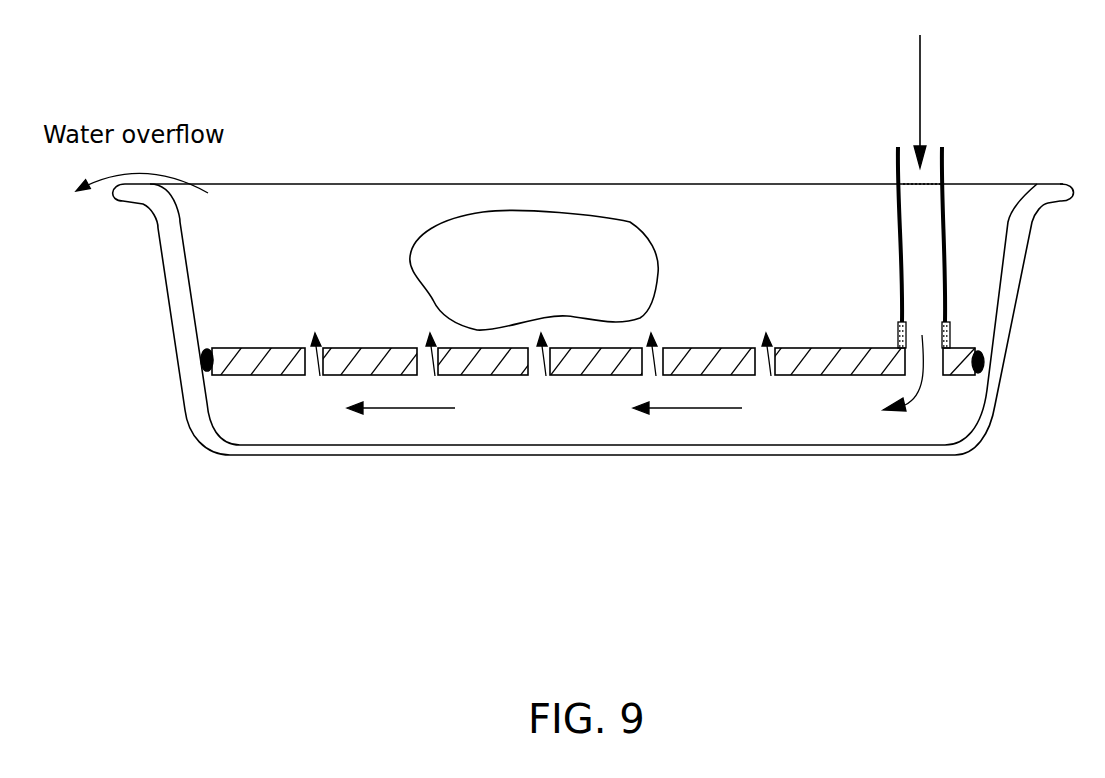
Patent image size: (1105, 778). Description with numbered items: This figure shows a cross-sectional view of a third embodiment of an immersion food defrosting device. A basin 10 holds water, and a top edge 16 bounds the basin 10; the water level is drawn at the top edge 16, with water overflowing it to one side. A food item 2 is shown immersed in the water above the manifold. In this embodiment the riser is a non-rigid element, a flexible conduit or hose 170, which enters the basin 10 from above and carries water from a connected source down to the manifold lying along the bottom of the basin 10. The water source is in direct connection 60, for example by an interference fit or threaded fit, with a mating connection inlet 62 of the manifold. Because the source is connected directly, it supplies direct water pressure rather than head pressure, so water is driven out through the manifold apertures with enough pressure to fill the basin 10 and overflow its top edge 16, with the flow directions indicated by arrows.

The basin 10 is at (1043, 196).
The top edge 16 is at (317, 184).
The object to be cleaned 2 is at (541, 286).
The flexible conduit or hose 170 is at (945, 157).
The mating connection inlet 62 is at (940, 337).
The direct connection 60 is at (948, 326).